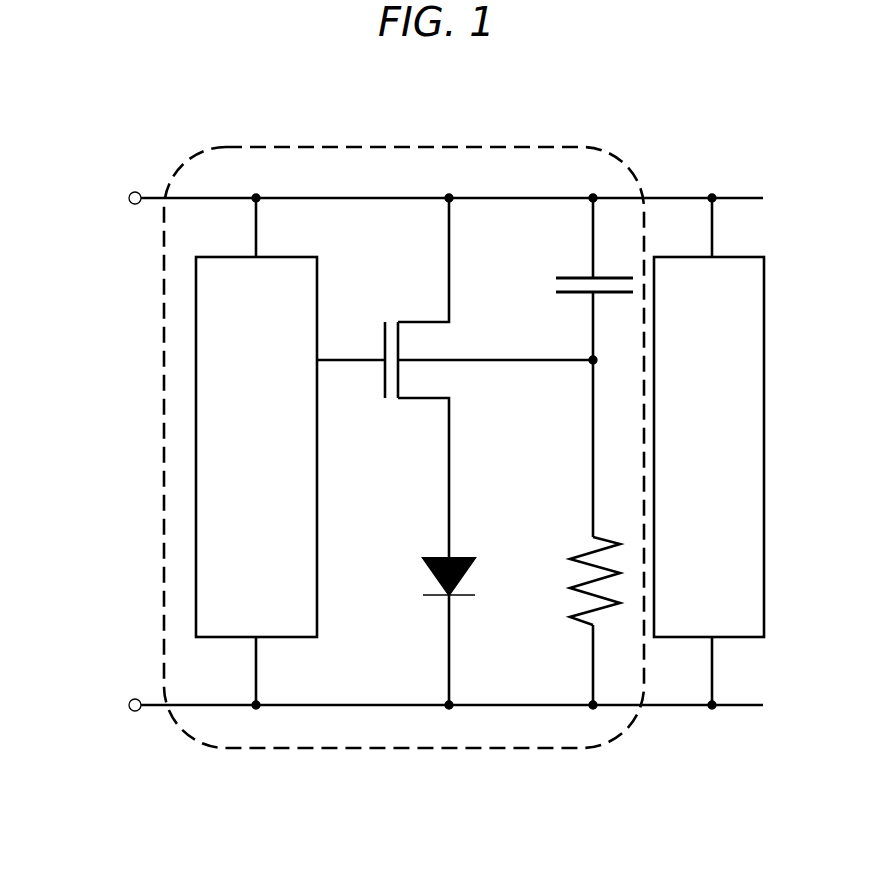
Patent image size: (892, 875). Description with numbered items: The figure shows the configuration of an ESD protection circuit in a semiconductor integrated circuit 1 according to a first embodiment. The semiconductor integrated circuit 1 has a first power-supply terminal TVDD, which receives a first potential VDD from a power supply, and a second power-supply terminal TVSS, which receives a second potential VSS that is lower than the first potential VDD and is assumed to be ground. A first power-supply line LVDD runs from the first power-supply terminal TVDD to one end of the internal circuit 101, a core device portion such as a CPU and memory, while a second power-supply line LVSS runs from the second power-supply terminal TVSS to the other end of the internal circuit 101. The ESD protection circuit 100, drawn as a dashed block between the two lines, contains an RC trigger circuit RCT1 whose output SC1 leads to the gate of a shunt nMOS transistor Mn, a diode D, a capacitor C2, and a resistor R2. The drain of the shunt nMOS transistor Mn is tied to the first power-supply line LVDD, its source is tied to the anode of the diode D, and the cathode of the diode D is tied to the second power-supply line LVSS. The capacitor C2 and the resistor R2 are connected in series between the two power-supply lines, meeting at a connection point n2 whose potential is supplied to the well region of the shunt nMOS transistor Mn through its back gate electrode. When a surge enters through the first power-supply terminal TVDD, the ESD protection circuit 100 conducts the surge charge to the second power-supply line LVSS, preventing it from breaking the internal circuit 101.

The semiconductor integrated circuit 1 is at (674, 95).
The ESD protection circuit 100 is at (303, 147).
The internal circuit 101 is at (697, 637).
The RC trigger circuit RCT1 is at (317, 278).
The shunt nMOS transistor Mn is at (408, 376).
The gate control signal line SC1 is at (351, 376).
The connection point n2 is at (497, 374).
The diode D is at (434, 620).
The capacitor C2 is at (571, 277).
The resistor R2 is at (574, 534).
The first power-supply terminal TVDD is at (139, 193).
The second power-supply terminal TVSS is at (137, 712).
The first power-supply line LVDD is at (492, 196).
The second power-supply line LVSS is at (505, 708).
The first potential VDD is at (118, 165).
The second potential VSS is at (117, 668).